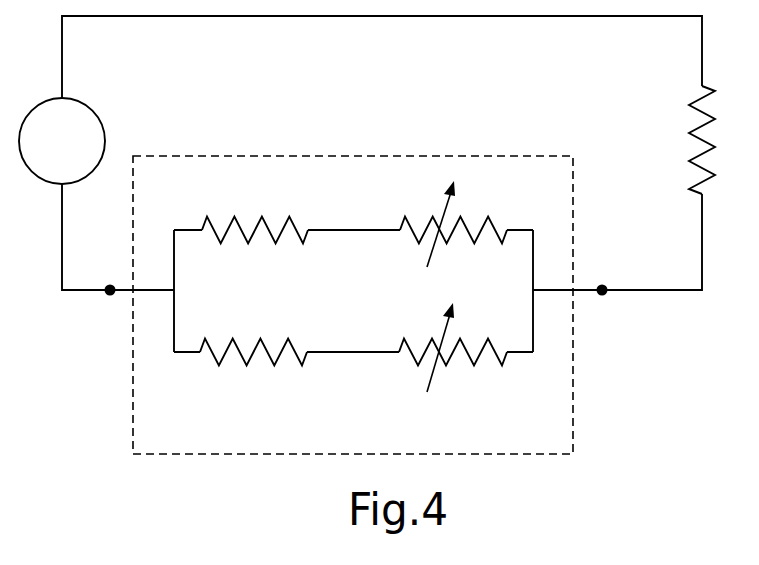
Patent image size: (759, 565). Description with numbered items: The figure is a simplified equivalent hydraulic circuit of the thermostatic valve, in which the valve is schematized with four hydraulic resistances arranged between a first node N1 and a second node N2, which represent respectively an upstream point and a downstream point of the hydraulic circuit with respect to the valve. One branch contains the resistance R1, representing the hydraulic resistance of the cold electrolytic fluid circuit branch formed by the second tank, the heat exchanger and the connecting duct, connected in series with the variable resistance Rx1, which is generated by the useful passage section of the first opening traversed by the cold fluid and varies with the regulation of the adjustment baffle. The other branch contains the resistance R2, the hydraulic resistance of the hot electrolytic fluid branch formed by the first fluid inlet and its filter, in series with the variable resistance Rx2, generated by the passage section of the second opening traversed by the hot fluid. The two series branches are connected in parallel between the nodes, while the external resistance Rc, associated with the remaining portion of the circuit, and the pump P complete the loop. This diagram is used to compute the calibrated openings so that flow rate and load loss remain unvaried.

The pump P is at (62, 141).
The first node N1 is at (104, 309).
The second node N2 is at (602, 309).
The resistance R1 is at (255, 214).
The resistance R2 is at (253, 372).
The resistance Rx1 is at (453, 224).
The resistance Rx2 is at (453, 354).
The external resistance Rc is at (680, 140).